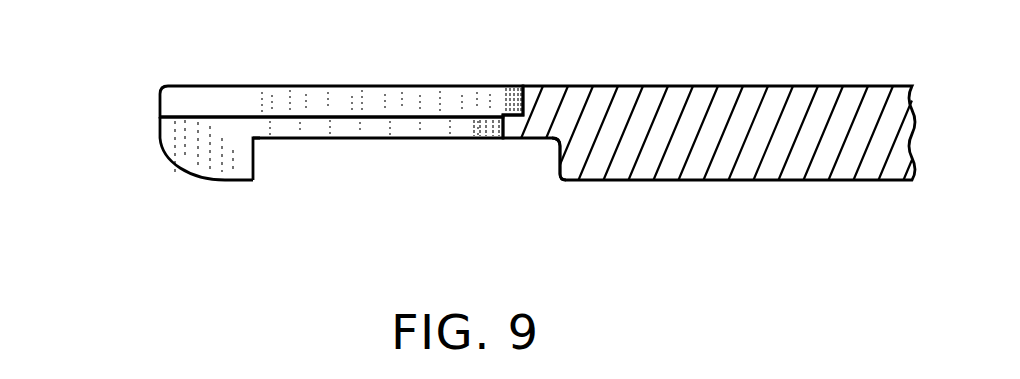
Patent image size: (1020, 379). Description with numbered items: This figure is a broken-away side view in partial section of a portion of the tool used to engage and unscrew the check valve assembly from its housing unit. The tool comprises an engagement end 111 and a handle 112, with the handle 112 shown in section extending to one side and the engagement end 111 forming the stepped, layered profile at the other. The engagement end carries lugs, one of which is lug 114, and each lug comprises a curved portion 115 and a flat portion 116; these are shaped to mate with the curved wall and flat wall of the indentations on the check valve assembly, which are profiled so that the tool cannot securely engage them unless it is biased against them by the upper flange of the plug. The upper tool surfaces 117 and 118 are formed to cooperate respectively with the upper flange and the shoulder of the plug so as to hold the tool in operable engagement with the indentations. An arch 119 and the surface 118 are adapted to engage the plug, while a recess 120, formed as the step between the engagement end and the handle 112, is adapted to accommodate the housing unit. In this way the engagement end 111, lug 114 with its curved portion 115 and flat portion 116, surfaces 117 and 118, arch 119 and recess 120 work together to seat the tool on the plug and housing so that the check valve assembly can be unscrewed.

The tool engagement end 111 is at (496, 114).
The handle 112 is at (796, 86).
The lug 114 is at (176, 140).
The curved portion 115 is at (178, 172).
The flat portion 116 is at (255, 162).
The upper tool surface 117 is at (356, 86).
The upper tool surface 118 is at (486, 138).
The arch 119 is at (508, 96).
The recess 120 is at (554, 163).